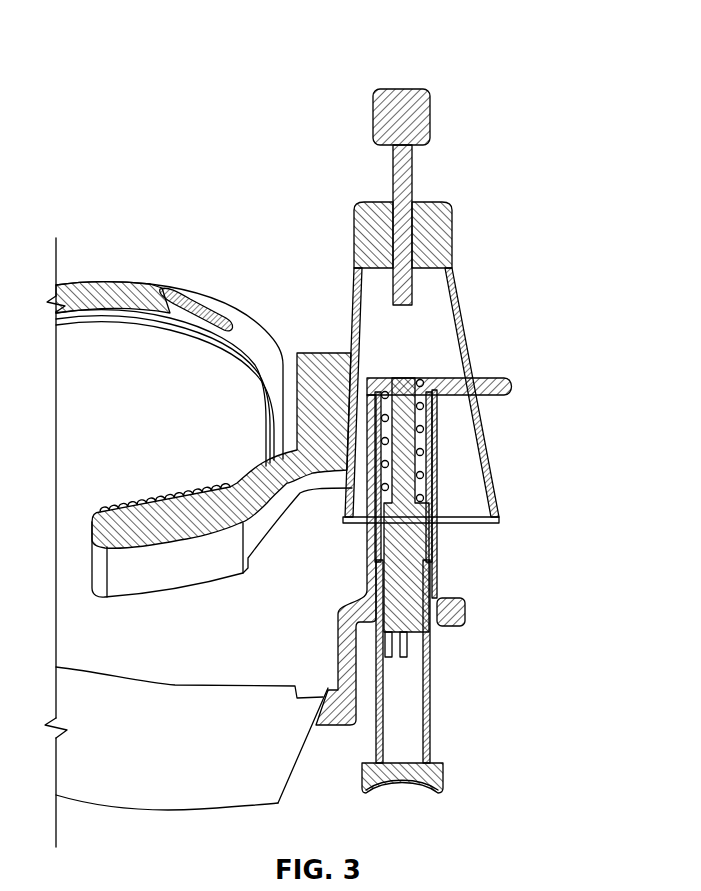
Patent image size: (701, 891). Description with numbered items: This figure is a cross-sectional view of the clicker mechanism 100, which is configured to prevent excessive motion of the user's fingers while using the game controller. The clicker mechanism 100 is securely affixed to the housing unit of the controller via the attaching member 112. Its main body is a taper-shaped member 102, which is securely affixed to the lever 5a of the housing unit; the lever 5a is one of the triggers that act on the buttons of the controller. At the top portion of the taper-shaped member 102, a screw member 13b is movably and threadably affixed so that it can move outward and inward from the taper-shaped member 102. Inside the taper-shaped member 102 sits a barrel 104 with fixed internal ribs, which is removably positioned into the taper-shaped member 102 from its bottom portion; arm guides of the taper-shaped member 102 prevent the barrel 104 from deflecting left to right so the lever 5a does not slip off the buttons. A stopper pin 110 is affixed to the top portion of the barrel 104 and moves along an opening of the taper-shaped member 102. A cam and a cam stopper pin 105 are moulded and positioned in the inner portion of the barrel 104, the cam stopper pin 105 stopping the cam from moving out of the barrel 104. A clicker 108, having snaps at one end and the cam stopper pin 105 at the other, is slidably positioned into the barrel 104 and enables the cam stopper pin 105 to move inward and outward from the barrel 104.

The clicker mechanism 100 is at (149, 70).
The lever 5a is at (153, 302).
The screw member 13b is at (406, 98).
The taper-shaped member 102 is at (463, 325).
The stopper pin 110 is at (513, 386).
The cam stopper pin 105 is at (420, 428).
The barrel 104 is at (438, 570).
The attaching member 112 is at (341, 668).
The clicker 108 is at (410, 712).